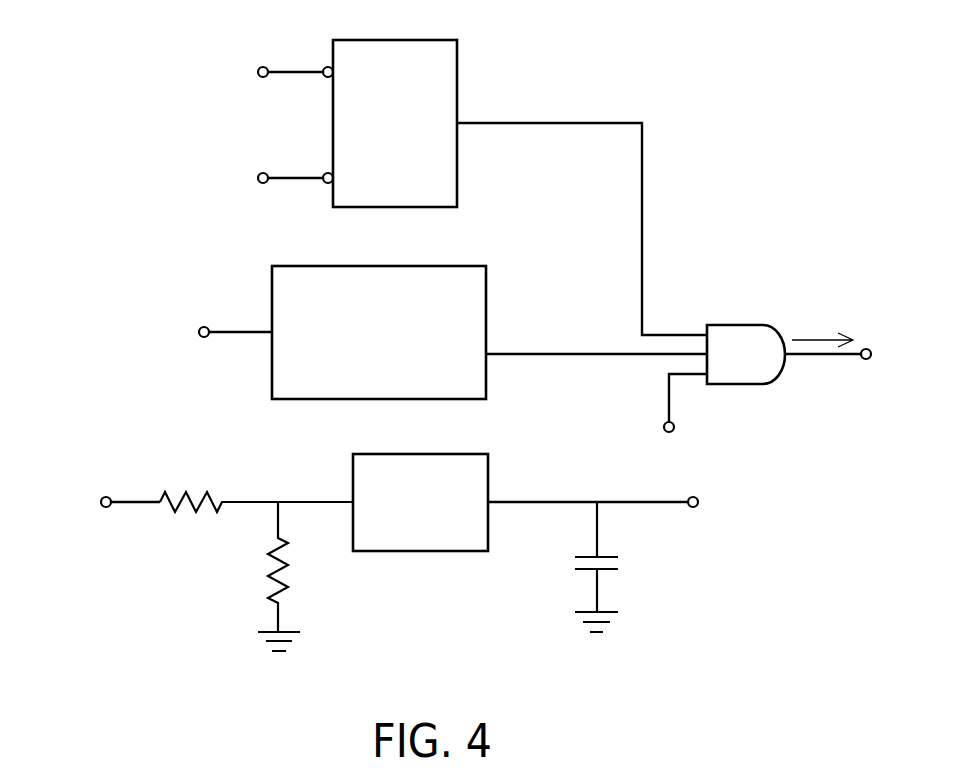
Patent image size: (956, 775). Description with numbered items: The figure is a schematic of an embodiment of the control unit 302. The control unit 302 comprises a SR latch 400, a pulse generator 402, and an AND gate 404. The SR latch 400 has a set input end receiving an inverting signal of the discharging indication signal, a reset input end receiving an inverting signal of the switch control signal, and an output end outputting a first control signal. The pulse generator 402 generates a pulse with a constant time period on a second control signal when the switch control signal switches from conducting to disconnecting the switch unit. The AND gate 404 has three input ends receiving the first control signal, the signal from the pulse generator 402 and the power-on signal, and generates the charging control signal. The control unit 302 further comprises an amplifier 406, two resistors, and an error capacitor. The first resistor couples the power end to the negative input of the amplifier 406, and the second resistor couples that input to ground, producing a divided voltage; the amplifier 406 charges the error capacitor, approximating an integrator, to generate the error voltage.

The control unit 302 is at (712, 90).
The SR latch 400 is at (459, 73).
The pulse generator 402 is at (272, 289).
The AND gate 404 is at (735, 324).
The amplifier 406 is at (489, 468).